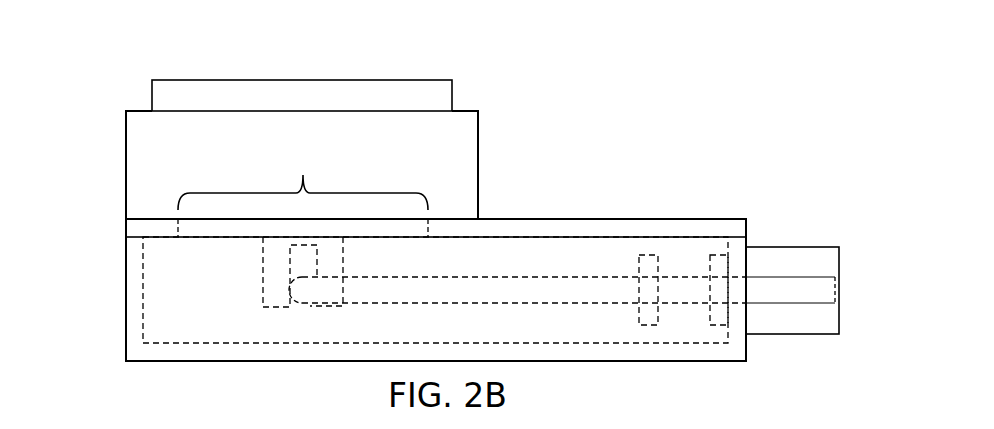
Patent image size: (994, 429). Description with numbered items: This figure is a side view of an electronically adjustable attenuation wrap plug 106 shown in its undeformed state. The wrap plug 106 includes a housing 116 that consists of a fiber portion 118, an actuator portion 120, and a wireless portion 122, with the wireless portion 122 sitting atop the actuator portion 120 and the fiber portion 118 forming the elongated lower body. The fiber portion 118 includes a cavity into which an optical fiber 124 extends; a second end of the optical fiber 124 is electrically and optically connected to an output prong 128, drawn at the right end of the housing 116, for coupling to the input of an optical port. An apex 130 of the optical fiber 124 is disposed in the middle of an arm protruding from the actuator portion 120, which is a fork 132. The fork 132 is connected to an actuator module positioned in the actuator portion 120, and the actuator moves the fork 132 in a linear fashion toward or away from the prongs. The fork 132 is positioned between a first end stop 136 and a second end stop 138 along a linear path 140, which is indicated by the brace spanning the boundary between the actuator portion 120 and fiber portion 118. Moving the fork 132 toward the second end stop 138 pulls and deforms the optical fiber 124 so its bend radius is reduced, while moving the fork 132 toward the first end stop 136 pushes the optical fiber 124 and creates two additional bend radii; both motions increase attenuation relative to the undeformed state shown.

The wrap plug 106 is at (689, 77).
The housing 116 is at (608, 210).
The fiber portion 118 is at (698, 219).
The actuator portion 120 is at (478, 143).
The wireless portion 122 is at (425, 80).
The optical fiber 124 is at (470, 277).
The output prong 128 is at (807, 247).
The apex 130 is at (302, 303).
The fork 132 is at (263, 272).
The first end stop 136 is at (428, 229).
The second end stop 138 is at (178, 229).
The linear path 140 is at (303, 181).